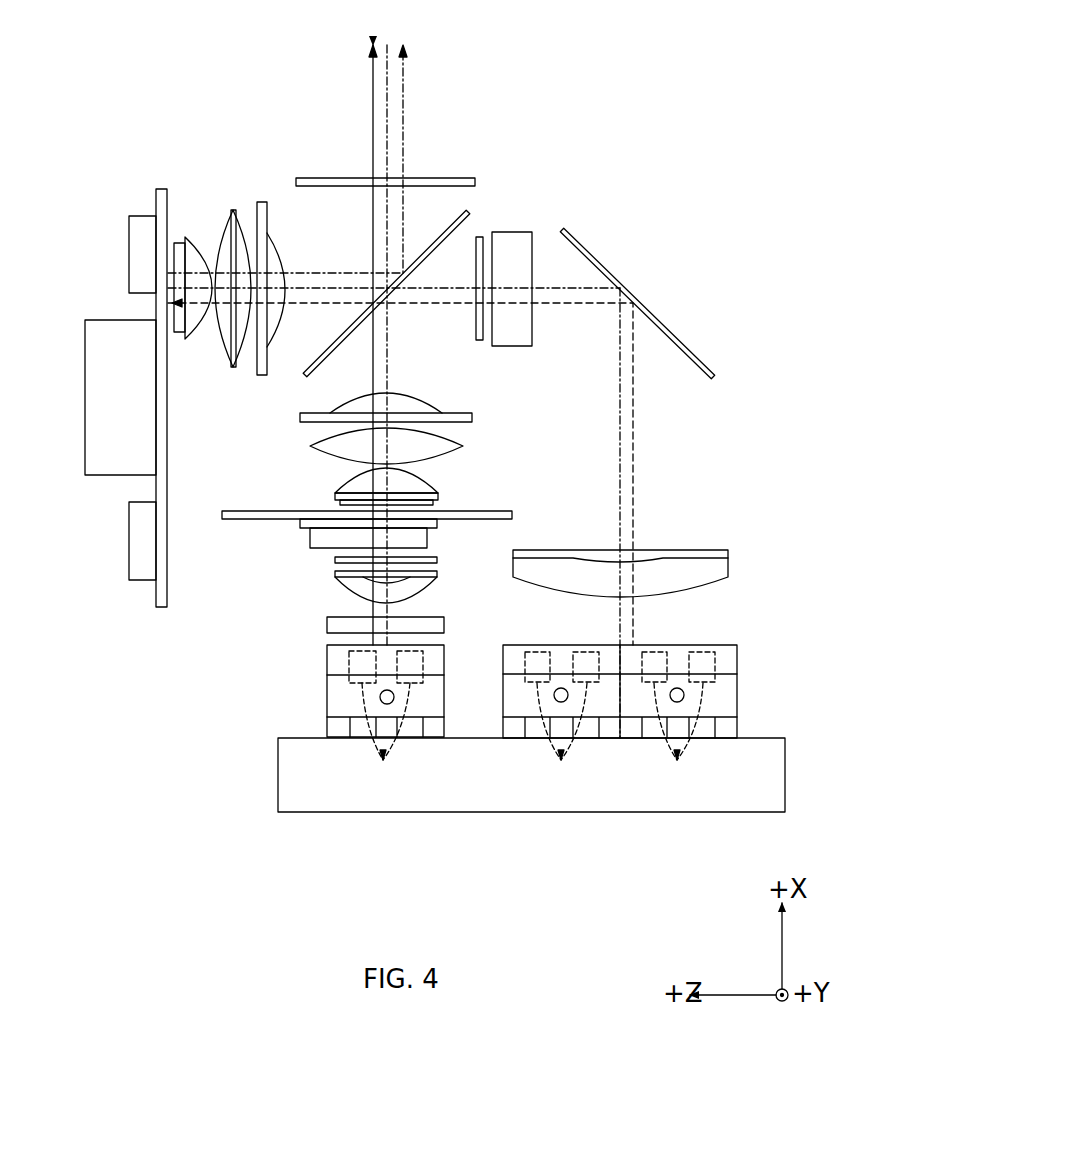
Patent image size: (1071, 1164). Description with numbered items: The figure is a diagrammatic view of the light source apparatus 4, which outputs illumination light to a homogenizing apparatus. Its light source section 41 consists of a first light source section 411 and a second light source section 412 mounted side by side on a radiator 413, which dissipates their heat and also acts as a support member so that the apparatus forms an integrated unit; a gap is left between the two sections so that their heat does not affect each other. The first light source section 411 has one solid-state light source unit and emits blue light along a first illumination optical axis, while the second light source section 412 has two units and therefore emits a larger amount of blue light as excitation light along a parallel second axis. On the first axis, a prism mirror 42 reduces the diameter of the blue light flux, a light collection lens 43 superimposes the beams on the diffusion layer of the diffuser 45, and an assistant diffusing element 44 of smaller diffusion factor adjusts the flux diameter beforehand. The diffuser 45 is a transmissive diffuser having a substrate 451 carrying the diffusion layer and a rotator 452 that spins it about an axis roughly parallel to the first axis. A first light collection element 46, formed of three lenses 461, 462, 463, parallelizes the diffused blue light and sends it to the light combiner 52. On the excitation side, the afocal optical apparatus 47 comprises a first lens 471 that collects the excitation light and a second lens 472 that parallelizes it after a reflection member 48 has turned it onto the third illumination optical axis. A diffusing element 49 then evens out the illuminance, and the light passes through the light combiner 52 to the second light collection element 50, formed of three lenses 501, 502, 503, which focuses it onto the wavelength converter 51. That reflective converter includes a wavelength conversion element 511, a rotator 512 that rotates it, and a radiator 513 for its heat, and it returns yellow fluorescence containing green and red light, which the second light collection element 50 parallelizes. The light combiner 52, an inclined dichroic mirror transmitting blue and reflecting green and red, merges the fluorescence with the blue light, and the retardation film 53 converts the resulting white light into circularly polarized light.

The light source apparatus 4 is at (700, 76).
The light source section 41 is at (772, 605).
The first light source section 411 is at (327, 692).
The second light source section 412 is at (737, 690).
The radiator 413 is at (717, 813).
The prism mirror 42 is at (327, 625).
The light collection lens 43 is at (335, 577).
The assistant diffusing element 44 is at (437, 560).
The diffuser 45 is at (263, 573).
The substrate 451 is at (227, 520).
The rotator 452 is at (310, 543).
The first light collection element 46 is at (541, 407).
The lens 461 is at (438, 480).
The lens 462 is at (463, 446).
The lens 463 is at (472, 417).
The afocal optical apparatus 47 is at (653, 375).
The first lens 471 is at (707, 550).
The second lens 472 is at (512, 230).
The reflection member 48 is at (700, 355).
The diffusing element 49 is at (477, 342).
The second light collection element 50 is at (290, 144).
The lens 501 is at (194, 240).
The lens 502 is at (240, 213).
The lens 503 is at (262, 200).
The wavelength converter 51 is at (113, 185).
The wavelength conversion element 511 is at (160, 608).
The rotator 512 is at (85, 440).
The radiator 513 is at (129, 253).
The light combiner 52 is at (467, 223).
The retardation film 53 is at (447, 177).